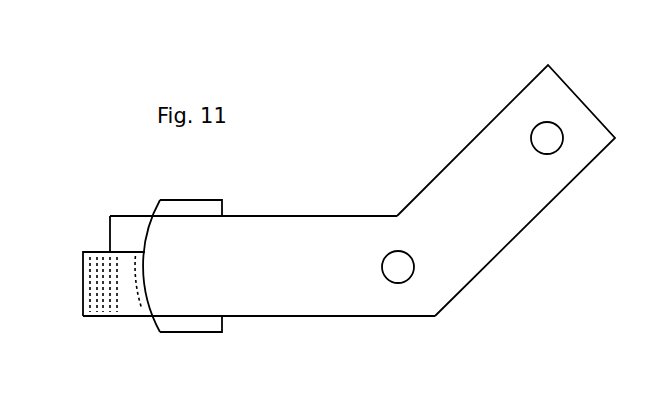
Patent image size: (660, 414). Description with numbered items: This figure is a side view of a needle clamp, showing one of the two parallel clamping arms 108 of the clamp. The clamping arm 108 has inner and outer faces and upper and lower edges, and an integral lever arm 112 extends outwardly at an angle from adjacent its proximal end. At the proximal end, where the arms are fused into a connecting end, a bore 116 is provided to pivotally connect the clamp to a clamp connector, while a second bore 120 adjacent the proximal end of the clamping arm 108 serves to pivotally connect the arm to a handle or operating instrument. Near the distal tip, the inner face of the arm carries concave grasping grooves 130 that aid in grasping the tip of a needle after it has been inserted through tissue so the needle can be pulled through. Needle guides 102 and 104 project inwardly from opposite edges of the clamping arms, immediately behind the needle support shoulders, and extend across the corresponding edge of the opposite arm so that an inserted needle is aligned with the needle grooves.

The needle guide 102 is at (193, 207).
The needle guide 104 is at (182, 327).
The clamping arm 108 is at (314, 230).
The lever arm 112 is at (497, 228).
The bore 116 is at (543, 133).
The bore 120 is at (395, 265).
The concave grasping groove 130 is at (93, 277).